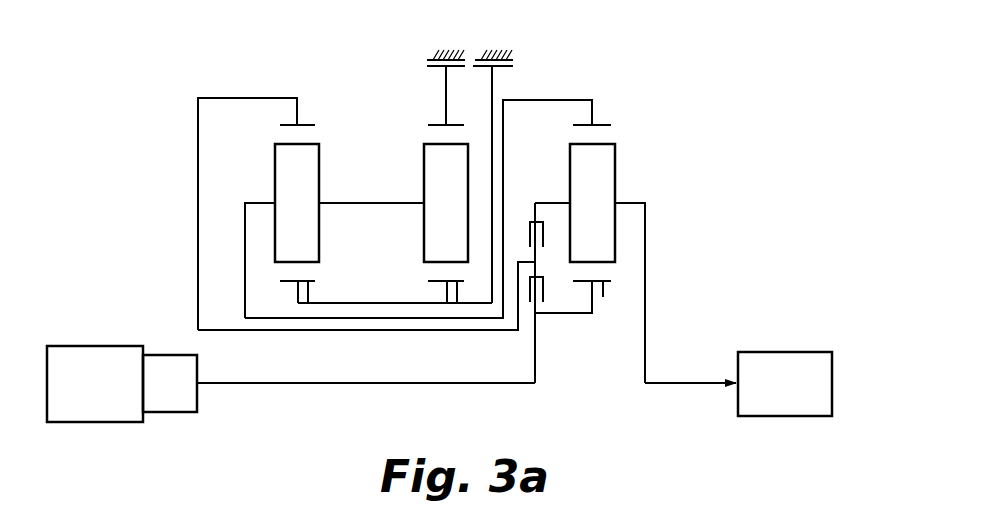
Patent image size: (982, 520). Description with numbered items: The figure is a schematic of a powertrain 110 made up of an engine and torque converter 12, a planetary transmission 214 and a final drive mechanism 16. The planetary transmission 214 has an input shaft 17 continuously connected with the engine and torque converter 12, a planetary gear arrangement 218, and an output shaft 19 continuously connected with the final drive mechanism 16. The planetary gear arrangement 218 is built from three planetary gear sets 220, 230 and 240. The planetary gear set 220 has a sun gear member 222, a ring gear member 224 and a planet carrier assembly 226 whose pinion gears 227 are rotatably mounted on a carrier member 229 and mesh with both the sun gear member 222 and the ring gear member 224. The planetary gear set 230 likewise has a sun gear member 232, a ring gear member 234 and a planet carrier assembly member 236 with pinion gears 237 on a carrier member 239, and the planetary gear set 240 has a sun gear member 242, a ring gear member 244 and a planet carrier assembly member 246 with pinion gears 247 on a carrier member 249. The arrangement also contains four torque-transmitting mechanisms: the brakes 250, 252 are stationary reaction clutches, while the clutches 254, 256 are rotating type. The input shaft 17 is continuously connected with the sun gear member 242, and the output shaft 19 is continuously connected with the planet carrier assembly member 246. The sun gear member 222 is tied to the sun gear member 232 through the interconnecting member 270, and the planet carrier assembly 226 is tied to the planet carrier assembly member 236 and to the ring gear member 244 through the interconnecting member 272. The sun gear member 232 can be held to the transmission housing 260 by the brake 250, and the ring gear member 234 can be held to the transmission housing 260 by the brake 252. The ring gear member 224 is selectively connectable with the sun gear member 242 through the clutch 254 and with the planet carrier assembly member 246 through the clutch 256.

The transmission 110 is at (712, 103).
The engine and torque converter 12 is at (111, 338).
The final drive mechanism 16 is at (774, 345).
The input shaft 17 is at (222, 383).
The output shaft 19 is at (703, 383).
The planetary transmission 214 is at (328, 60).
The planetary gear arrangement 218 is at (355, 60).
The planetary gear set 220 is at (288, 284).
The sun gear member 222 is at (308, 282).
The ring gear member 224 is at (290, 124).
The planet carrier assembly 226 is at (268, 191).
The pinion gears 227 is at (312, 194).
The carrier member 229 is at (258, 202).
The planetary gear set 230 is at (437, 284).
The sun gear member 232 is at (457, 282).
The ring gear member 234 is at (438, 123).
The planet carrier assembly member 236 is at (417, 211).
The pinion gears 237 is at (461, 194).
The carrier member 239 is at (408, 205).
The planetary gear set 240 is at (582, 284).
The sun gear member 242 is at (603, 282).
The ring gear member 244 is at (583, 124).
The planet carrier assembly member 246 is at (627, 190).
The pinion gears 247 is at (607, 194).
The carrier member 249 is at (637, 202).
The brake 250 is at (518, 61).
The brake 252 is at (424, 60).
The clutch 254 is at (522, 294).
The clutch 256 is at (524, 213).
The transmission housing 260 is at (437, 53).
The interconnecting member 270 is at (357, 305).
The interconnecting member 272 is at (352, 202).